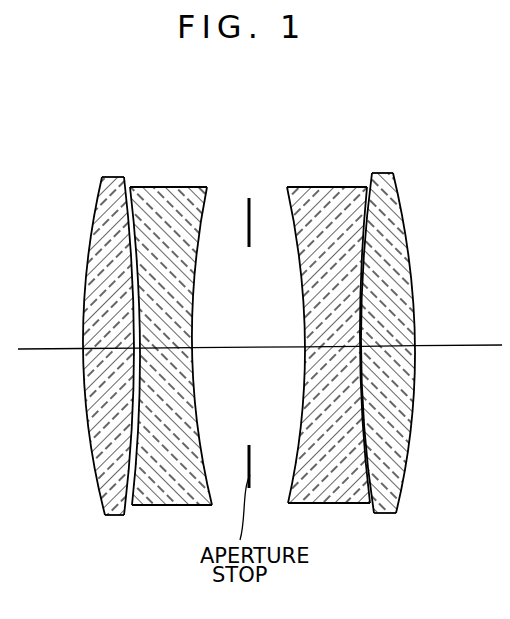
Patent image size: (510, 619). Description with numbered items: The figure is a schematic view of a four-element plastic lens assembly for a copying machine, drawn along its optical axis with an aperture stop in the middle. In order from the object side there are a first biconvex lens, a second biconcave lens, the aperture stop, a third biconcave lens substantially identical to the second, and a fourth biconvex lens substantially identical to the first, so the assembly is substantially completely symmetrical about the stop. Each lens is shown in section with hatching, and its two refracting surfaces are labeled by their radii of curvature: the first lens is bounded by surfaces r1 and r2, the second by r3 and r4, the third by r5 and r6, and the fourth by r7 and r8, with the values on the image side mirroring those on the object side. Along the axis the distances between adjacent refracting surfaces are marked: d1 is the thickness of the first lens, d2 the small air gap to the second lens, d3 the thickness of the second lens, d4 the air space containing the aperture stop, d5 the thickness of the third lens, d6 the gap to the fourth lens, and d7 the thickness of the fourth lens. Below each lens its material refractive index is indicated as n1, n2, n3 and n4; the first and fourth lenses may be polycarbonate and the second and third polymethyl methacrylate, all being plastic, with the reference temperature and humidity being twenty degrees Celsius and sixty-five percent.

The radius of curvature of the first refracting surface r1 is at (98, 194).
The radius of curvature of the second refracting surface r2 is at (125, 183).
The radius of curvature of the third refracting surface r3 is at (133, 193).
The radius of curvature of the fourth refracting surface r4 is at (205, 202).
The radius of curvature of the fifth refracting surface r5 is at (289, 203).
The radius of curvature of the sixth refracting surface r6 is at (360, 205).
The radius of curvature of the seventh refracting surface r7 is at (373, 193).
The radius of curvature of the eighth refracting surface r8 is at (398, 195).
The distance between the first and second refracting surfaces d1 is at (108, 348).
The distance between the second and third refracting surfaces d2 is at (137, 347).
The distance between the third and fourth refracting surfaces d3 is at (162, 348).
The distance between the fourth and fifth refracting surfaces d4 is at (247, 347).
The distance between the fifth and sixth refracting surfaces d5 is at (338, 347).
The distance between the sixth and seventh refracting surfaces d6 is at (361, 347).
The distance between the seventh and eighth refracting surfaces d7 is at (410, 347).
The refractive index of the first lens material n1 is at (113, 515).
The refractive index of the second lens material n2 is at (163, 505).
The refractive index of the third lens material n3 is at (320, 503).
The refractive index of the fourth lens material n4 is at (390, 513).